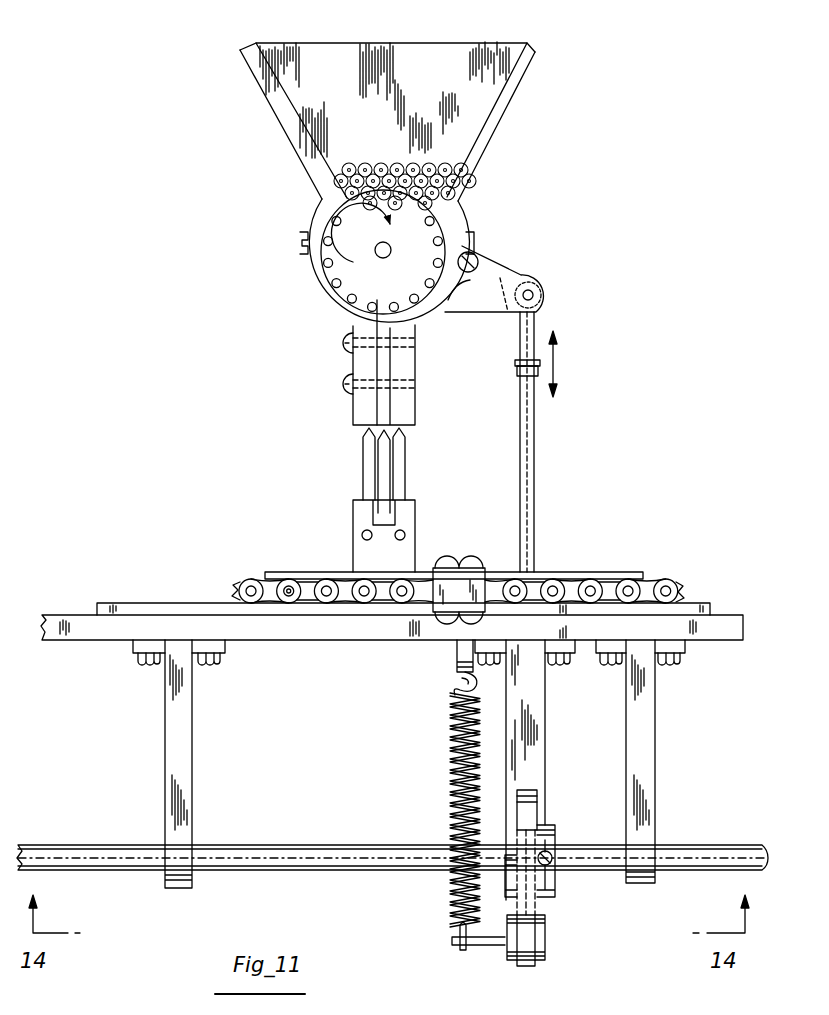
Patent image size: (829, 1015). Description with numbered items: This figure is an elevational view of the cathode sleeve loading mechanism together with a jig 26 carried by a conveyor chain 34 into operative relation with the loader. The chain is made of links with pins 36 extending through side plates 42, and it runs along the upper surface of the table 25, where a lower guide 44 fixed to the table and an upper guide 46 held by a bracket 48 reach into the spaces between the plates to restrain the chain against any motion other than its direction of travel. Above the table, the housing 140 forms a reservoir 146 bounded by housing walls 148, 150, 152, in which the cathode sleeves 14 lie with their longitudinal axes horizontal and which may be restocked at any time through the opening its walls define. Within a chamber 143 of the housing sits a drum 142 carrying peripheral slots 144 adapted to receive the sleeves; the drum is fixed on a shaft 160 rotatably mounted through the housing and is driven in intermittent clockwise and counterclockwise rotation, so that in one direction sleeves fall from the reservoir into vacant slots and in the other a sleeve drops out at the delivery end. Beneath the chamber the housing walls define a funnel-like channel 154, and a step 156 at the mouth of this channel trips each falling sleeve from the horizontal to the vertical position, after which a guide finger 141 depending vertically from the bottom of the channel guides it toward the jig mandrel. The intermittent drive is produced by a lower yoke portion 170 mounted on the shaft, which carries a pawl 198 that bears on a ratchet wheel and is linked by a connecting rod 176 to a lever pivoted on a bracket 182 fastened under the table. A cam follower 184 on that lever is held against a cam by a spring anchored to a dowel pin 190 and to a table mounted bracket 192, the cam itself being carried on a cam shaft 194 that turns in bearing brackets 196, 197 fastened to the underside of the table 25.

The housing 140 is at (258, 93).
The reservoir 146 is at (343, 52).
The housing wall 150 is at (387, 31).
The housing wall 148 is at (296, 105).
The housing wall 152 is at (478, 100).
The cathode sleeve 14 is at (400, 168).
The drum 142 is at (430, 215).
The peripheral slot 144 is at (335, 272).
The chamber 143 is at (352, 296).
The shaft 160 is at (393, 251).
The step 156 is at (395, 318).
The lower yoke portion 170 is at (518, 270).
The funnel-like channel 154 is at (383, 410).
The guide finger 141 is at (372, 430).
The connecting rod 176 is at (536, 458).
The jig 26 is at (353, 530).
The pin 36 is at (251, 586).
The side plate 42 is at (288, 586).
The bracket 48 is at (460, 570).
The conveyor chain 34 is at (600, 572).
The upper guide 46 is at (625, 575).
The lower guide 44 is at (708, 605).
The table 25 is at (742, 625).
The table mounted bracket 192 is at (457, 656).
The pawl 198 is at (450, 700).
The bracket 182 is at (545, 703).
The bearing bracket 196 is at (192, 722).
The bearing bracket 197 is at (656, 738).
The cam shaft 194 is at (328, 870).
The dowel pin 190 is at (490, 945).
The cam follower 184 is at (532, 962).